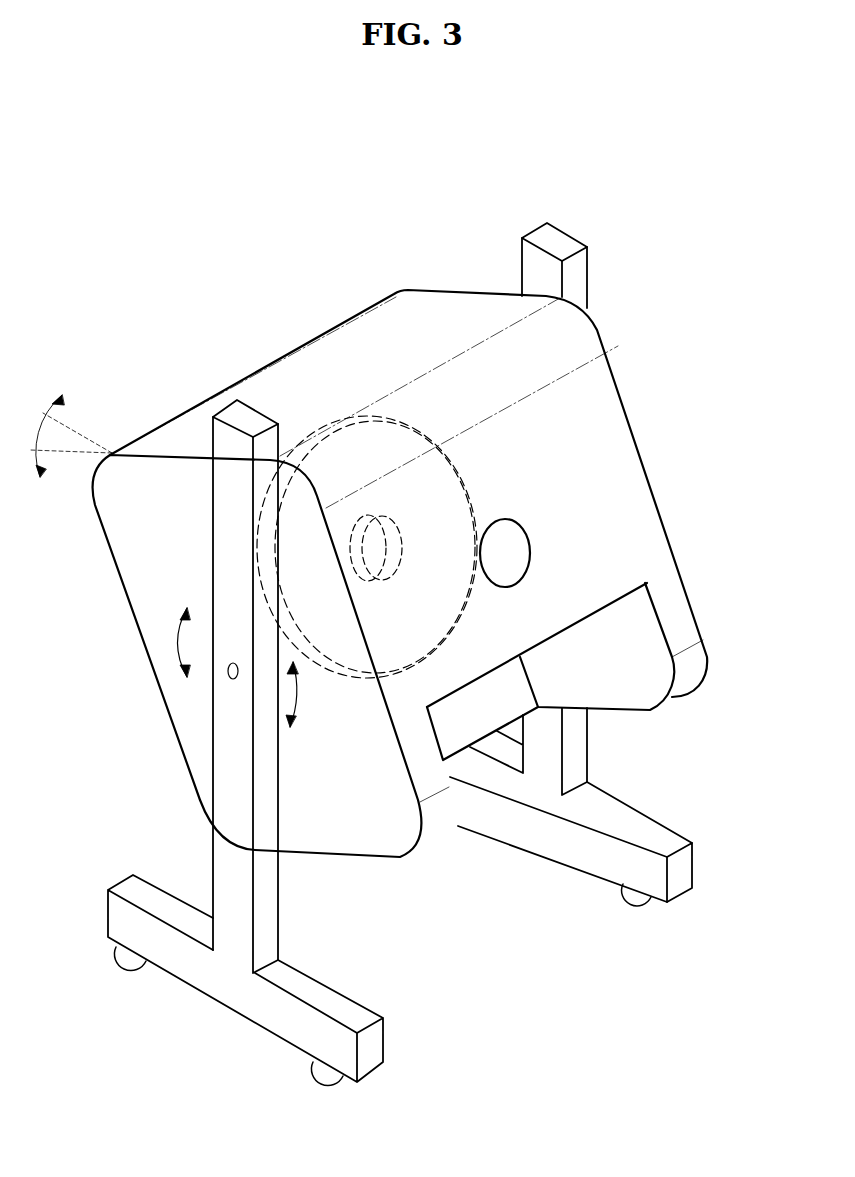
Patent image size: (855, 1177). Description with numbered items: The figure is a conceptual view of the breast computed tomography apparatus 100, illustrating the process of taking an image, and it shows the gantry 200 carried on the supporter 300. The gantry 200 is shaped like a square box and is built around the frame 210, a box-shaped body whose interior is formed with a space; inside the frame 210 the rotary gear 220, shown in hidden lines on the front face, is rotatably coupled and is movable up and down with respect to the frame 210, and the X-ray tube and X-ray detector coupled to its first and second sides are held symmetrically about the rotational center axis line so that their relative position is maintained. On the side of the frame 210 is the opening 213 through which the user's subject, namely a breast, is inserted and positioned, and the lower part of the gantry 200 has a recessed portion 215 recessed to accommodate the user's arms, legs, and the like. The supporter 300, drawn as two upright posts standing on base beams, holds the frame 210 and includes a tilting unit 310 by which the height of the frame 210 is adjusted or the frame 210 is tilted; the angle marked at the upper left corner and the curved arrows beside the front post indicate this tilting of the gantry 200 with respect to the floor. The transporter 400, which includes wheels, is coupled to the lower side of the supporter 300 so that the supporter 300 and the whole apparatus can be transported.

The breast computed tomography apparatus 100 is at (181, 165).
The gantry 200 is at (712, 361).
The frame 210 is at (620, 392).
The opening 213 is at (513, 537).
The recessed portion 215 is at (610, 633).
The rotary gear 220 is at (328, 433).
The supporter 300 is at (562, 232).
The tilting unit 310 is at (228, 672).
The transporter 400 is at (132, 958).